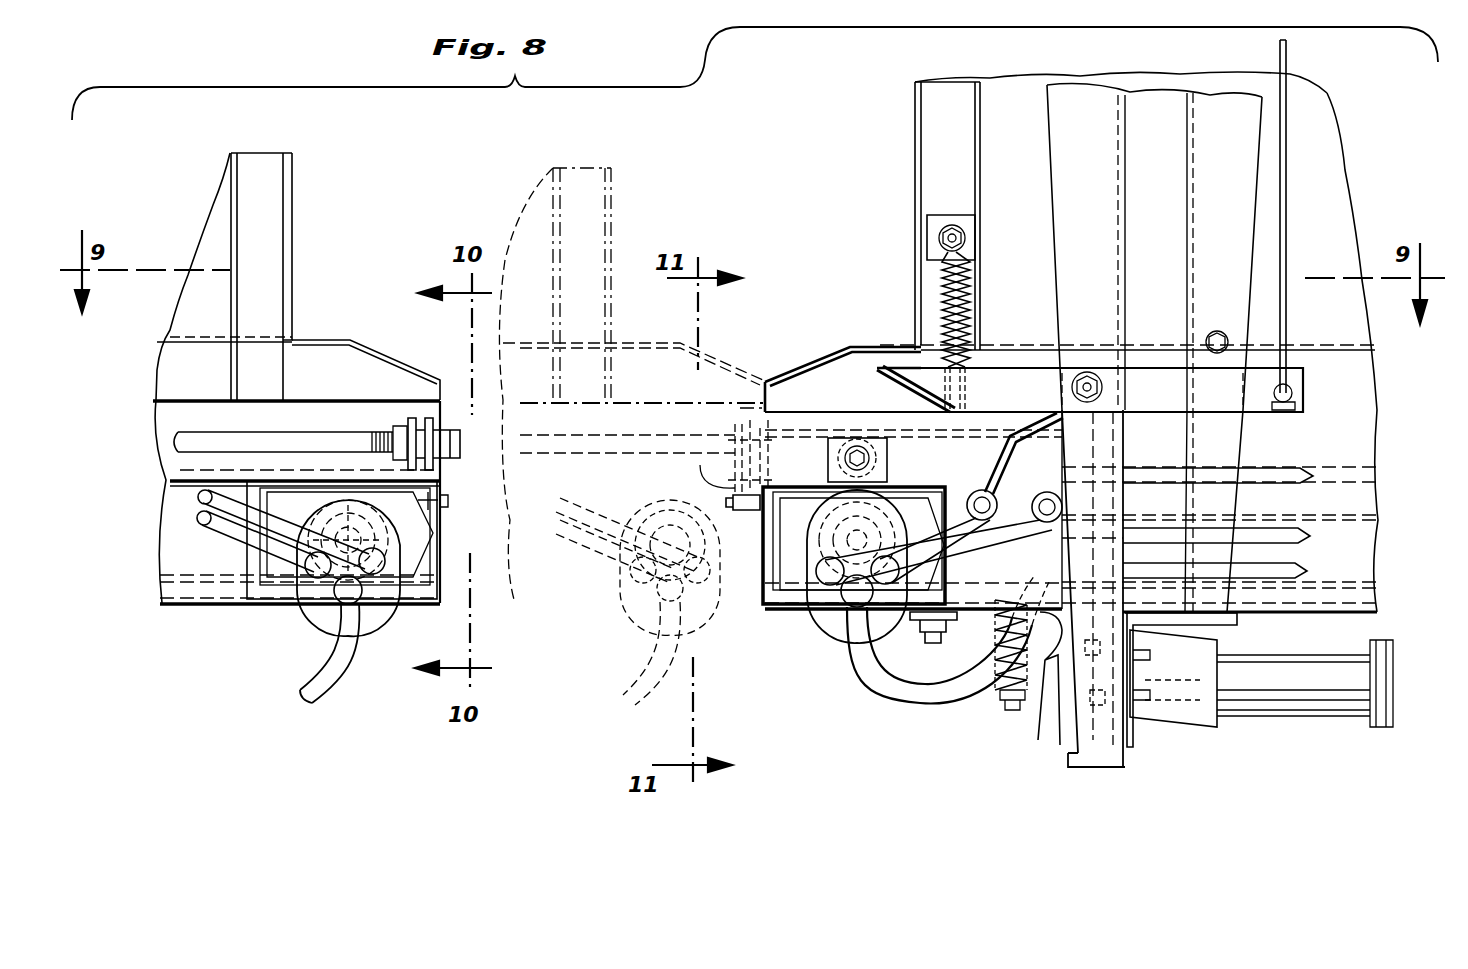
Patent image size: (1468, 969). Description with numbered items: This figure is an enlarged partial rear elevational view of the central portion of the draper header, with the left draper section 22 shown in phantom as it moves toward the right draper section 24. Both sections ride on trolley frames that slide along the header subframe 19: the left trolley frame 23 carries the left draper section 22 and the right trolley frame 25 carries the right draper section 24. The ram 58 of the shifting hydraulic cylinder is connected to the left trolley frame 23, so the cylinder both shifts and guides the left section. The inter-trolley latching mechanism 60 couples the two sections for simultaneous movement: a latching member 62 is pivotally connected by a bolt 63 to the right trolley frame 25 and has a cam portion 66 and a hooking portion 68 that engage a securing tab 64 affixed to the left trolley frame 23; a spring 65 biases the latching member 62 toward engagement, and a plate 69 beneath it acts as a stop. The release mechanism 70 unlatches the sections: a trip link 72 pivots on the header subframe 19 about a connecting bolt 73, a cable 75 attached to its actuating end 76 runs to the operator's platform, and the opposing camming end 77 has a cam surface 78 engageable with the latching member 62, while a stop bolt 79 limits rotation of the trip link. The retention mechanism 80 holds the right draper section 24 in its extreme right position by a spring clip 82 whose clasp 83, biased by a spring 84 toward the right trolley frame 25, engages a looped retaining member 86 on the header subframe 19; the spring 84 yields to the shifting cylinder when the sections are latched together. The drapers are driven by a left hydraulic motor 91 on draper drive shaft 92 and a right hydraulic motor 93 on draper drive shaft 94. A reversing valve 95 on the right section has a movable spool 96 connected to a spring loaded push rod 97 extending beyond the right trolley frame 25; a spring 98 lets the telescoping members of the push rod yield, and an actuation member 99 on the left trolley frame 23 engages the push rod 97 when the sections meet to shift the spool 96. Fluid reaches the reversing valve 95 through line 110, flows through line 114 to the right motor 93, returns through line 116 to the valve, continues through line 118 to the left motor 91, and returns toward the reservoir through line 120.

The header subframe 19 is at (1240, 170).
The left draper section 22 is at (295, 196).
The left trolley frame 23 is at (350, 345).
The right draper section 24 is at (888, 133).
The right trolley frame 25 is at (1342, 132).
The ram 58 is at (296, 433).
The inter-trolley latching mechanism 60 is at (892, 726).
The latching member 62 is at (860, 400).
The bolt 63 is at (850, 455).
The securing tab 64 is at (430, 470).
The spring 65 is at (966, 282).
The cam portion 66 is at (702, 465).
The hooking portion 68 is at (715, 488).
The plate 69 is at (793, 453).
The release mechanism 70 is at (1370, 206).
The trip link 72 is at (1220, 396).
The connecting bolt 73 is at (1090, 372).
The cable 75 is at (1288, 298).
The actuating end 76 is at (1302, 392).
The camming end 77 is at (910, 365).
The cam surface 78 is at (880, 366).
The stop bolt 79 is at (1220, 331).
The retention mechanism 80 is at (970, 782).
The spring clip 82 is at (985, 630).
The clasp 83 is at (1046, 700).
The spring 84 is at (1020, 682).
The looped retaining member 86 is at (1068, 660).
The hydraulic motor 91 is at (318, 616).
The draper drive shaft 92 is at (348, 488).
The hydraulic motor 93 is at (828, 640).
The draper drive shaft 94 is at (793, 602).
The reversing valve 95 is at (1048, 462).
The spool 96 is at (975, 440).
The push rod 97 is at (748, 495).
The spring 98 is at (695, 590).
The actuation member 99 is at (449, 501).
The hydraulic line 110 is at (1300, 468).
The line 114 is at (1002, 522).
The line 116 is at (992, 491).
The line 118 is at (232, 527).
The line 120 is at (205, 497).